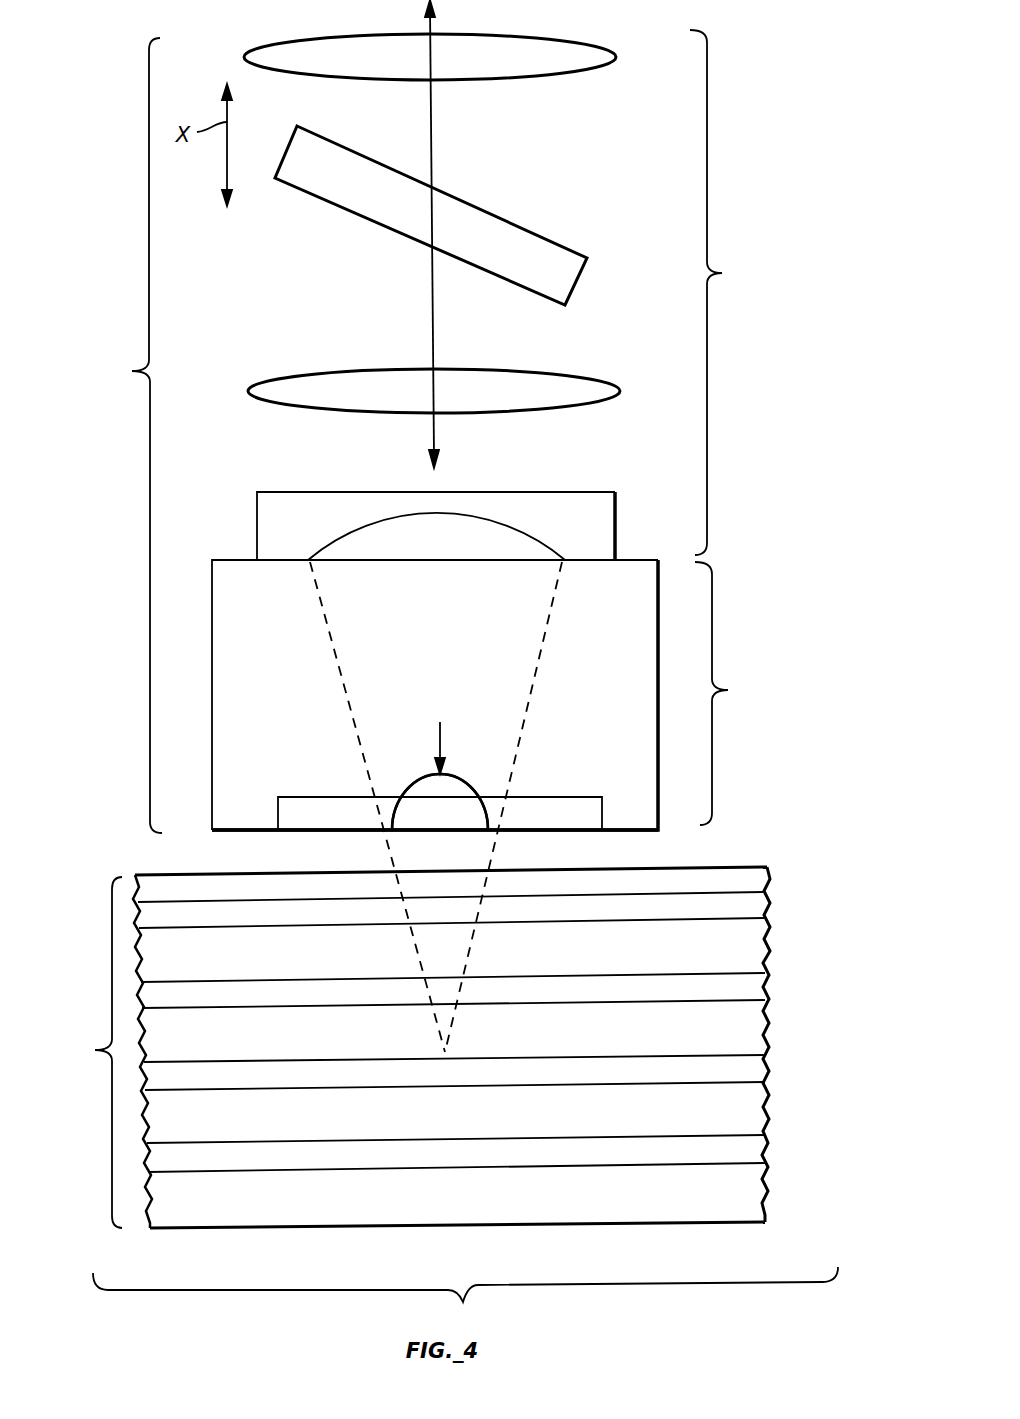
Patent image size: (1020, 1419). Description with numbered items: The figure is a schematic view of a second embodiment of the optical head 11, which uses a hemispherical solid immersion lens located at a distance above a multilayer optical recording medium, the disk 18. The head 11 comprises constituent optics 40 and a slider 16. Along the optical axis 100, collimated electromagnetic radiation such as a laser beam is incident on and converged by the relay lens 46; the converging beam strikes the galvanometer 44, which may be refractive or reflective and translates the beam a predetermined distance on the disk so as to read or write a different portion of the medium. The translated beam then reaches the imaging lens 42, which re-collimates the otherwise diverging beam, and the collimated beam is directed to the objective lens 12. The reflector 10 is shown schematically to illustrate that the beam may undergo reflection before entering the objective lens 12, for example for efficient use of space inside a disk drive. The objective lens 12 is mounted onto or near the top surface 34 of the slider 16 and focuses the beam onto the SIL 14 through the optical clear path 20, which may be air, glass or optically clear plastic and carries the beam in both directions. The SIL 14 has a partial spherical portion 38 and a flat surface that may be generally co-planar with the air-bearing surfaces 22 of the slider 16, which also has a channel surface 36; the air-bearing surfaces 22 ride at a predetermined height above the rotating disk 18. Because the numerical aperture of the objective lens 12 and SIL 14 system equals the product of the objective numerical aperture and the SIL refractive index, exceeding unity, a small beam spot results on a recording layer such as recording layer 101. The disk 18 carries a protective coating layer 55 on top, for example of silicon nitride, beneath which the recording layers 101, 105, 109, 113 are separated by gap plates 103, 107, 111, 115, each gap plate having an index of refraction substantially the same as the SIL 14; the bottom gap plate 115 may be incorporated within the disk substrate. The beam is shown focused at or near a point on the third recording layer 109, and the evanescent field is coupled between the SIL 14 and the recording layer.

The head 11 is at (130, 435).
The optical axis 100 is at (432, 116).
The relay lens 46 is at (537, 78).
The galvanometer 44 is at (538, 232).
The imaging lens 42 is at (543, 410).
The constituent optics 40 is at (449, 851).
The slider 16 is at (733, 693).
The reflector 10 is at (575, 492).
The objective lens 12 is at (452, 513).
The top surface 34 is at (636, 560).
The optical clear path 20 is at (442, 607).
The channel surface 36 is at (348, 800).
The SIL 14 is at (448, 774).
The partial spherical portion 38 is at (420, 778).
The air-bearing surfaces 22 is at (252, 834).
The disk 18 is at (450, 1042).
The protective coating layer 55 is at (770, 880).
The recording layer 101 is at (768, 910).
The gap plate 103 is at (768, 952).
The recording layer 105 is at (768, 989).
The gap plate 107 is at (768, 1032).
The recording layer 109 is at (768, 1072).
The gap plate 111 is at (768, 1112).
The recording layer 113 is at (768, 1152).
The gap plate 115 is at (768, 1194).